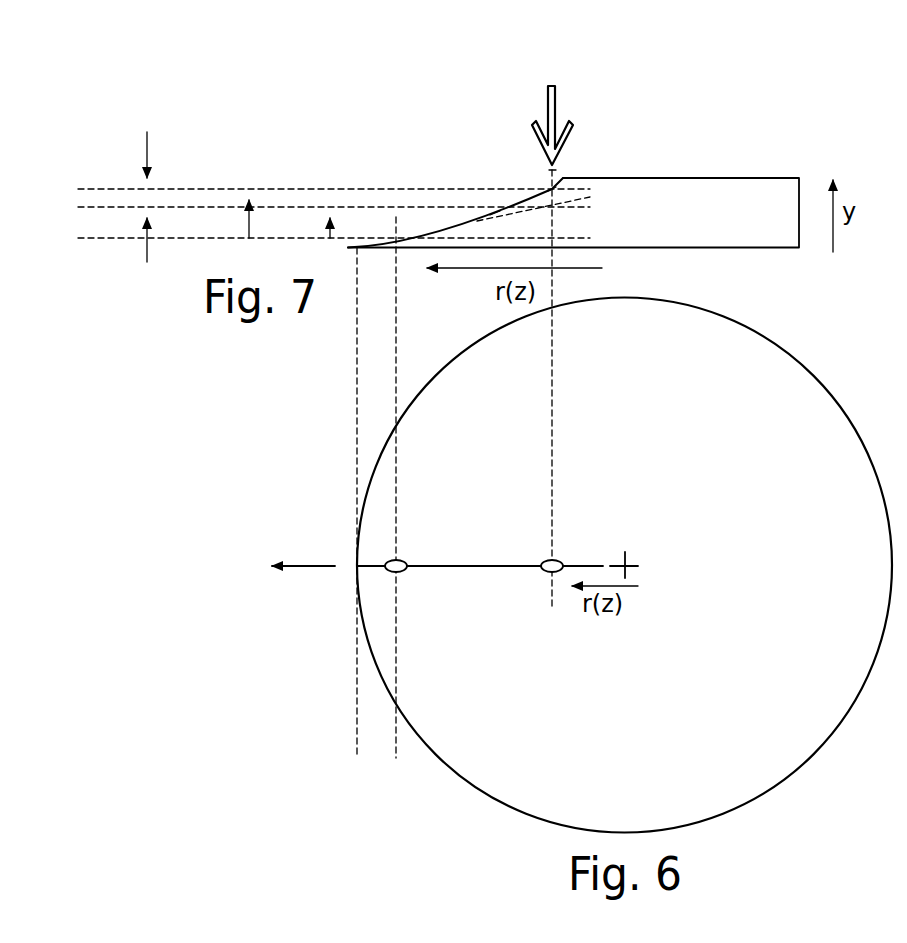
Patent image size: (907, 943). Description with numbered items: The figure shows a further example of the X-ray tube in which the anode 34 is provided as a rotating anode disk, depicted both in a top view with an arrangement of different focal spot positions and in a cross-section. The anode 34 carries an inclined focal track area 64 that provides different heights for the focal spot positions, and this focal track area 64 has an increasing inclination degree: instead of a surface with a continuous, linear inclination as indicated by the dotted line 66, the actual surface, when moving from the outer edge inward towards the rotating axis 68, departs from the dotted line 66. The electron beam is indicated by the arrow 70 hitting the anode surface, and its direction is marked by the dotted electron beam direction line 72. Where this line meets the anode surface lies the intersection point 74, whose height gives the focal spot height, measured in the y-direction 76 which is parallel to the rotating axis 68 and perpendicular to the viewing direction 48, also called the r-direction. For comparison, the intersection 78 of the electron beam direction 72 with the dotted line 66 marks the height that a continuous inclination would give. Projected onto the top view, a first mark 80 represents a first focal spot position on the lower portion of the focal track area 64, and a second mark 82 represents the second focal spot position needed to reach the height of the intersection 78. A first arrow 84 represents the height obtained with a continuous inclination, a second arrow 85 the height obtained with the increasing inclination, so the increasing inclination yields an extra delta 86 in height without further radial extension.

In FIG. 6, the anode 34 is at (443, 765).
In FIG. 6, the viewing direction 48 is at (302, 563).
In FIG. 7, the inclined focal track area 64 is at (444, 186).
In FIG. 7, the dotted line 66 is at (497, 220).
In FIG. 6, the rotating axis 68 is at (630, 553).
In FIG. 7, the arrow indicating electron beam 70 is at (566, 128).
In FIG. 7, the electron beam direction line 72 is at (555, 170).
In FIG. 7, the intersection point 74 is at (550, 186).
In FIG. 7, the y-direction 76 is at (833, 235).
In FIG. 7, the intersection 78 is at (553, 207).
In FIG. 6, the first mark 80 is at (411, 552).
In FIG. 6, the second mark 82 is at (567, 552).
In FIG. 7, the first arrow 84 is at (332, 220).
In FIG. 7, the second arrow 85 is at (250, 220).
In FIG. 7, the delta 86 is at (147, 197).